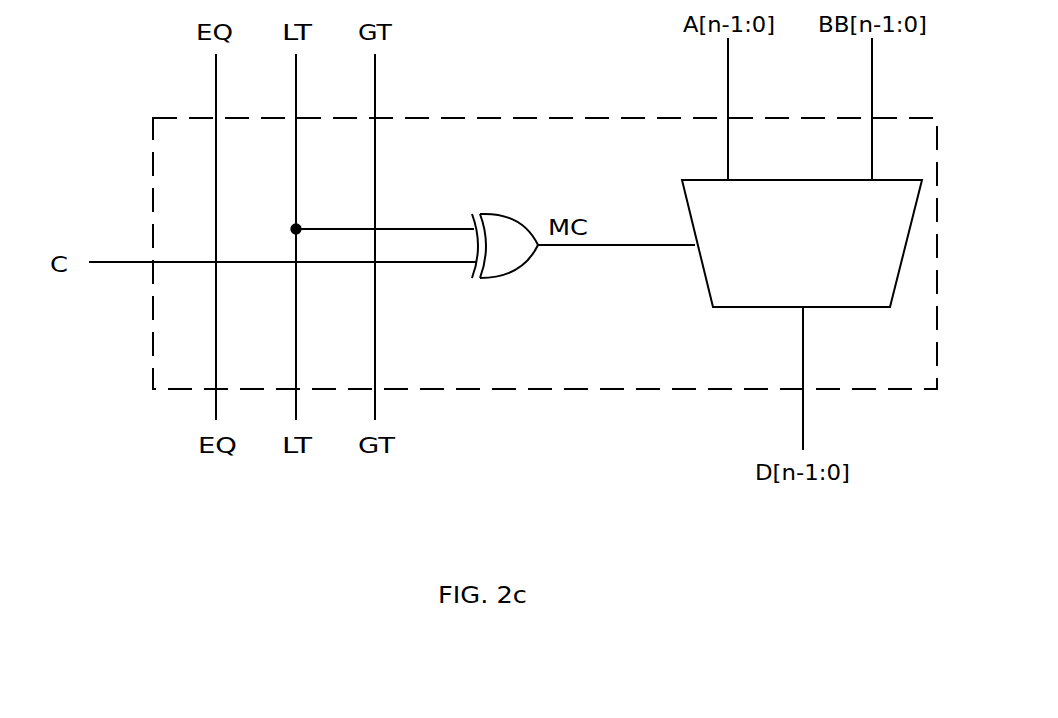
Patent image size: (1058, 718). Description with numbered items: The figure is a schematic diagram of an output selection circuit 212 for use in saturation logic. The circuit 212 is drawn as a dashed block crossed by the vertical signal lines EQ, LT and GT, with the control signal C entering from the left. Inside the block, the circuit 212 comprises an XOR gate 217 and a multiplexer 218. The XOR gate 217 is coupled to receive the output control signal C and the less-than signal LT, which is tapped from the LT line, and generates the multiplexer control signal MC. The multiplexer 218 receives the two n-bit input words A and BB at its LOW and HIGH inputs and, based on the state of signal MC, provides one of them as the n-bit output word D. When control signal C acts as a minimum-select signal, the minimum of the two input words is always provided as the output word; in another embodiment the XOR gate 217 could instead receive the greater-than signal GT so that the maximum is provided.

The output selection circuit 212 is at (168, 118).
The XOR gate 217 is at (512, 270).
The multiplexer 218 is at (823, 252).